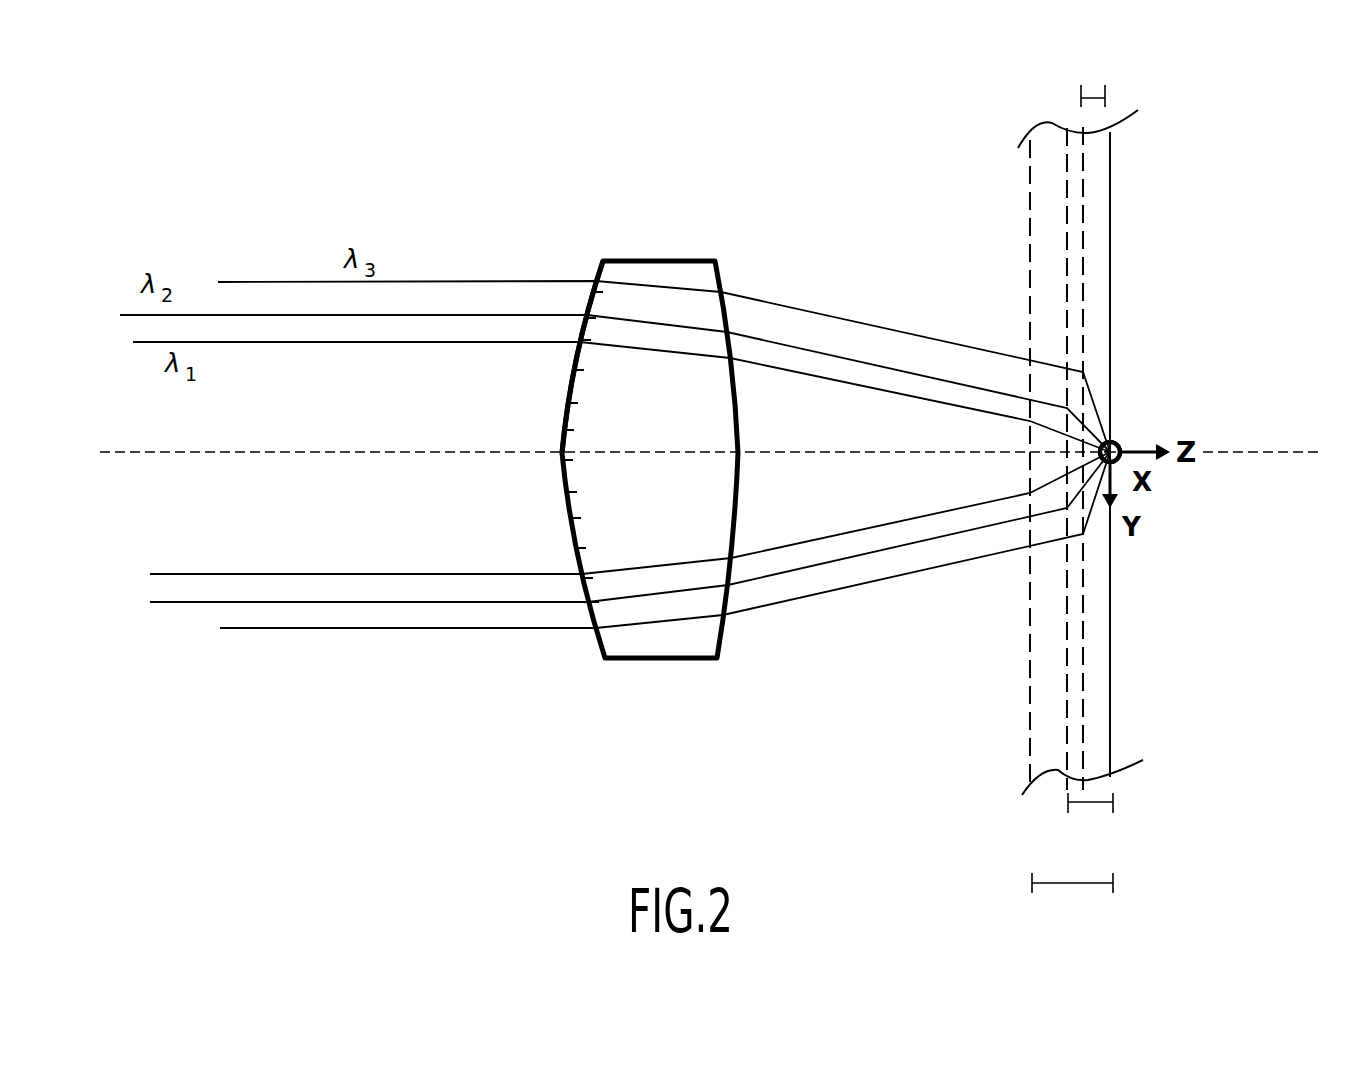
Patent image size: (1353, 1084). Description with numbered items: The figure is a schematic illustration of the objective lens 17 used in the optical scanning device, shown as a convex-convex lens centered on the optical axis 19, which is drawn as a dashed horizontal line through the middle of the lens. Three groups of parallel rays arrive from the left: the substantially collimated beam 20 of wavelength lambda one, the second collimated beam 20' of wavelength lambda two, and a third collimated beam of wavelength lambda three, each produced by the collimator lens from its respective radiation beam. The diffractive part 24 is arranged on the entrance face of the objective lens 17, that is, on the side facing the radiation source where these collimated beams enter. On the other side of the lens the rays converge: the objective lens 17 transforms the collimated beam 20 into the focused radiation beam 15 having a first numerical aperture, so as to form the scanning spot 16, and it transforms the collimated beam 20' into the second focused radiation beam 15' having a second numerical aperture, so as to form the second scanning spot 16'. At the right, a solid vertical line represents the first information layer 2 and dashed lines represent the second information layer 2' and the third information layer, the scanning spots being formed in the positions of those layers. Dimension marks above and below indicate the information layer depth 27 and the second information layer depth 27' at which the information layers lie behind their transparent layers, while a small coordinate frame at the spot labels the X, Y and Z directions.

The first information layer 2 is at (1162, 454).
The second information layer 2' is at (1152, 458).
The focused radiation beam 15 is at (915, 411).
The second focused radiation beam 15' is at (918, 420).
The scanning spot 16 is at (1162, 398).
The second scanning spot 16' is at (1166, 413).
The objective lens 17 is at (667, 258).
The optical axis 19 is at (1275, 453).
The collimated beam 20 is at (469, 241).
The second collimated beam 20' is at (423, 271).
The diffractive part 24 is at (600, 262).
The information layer depth 27 is at (1152, 87).
The second information layer depth 27' is at (1039, 811).